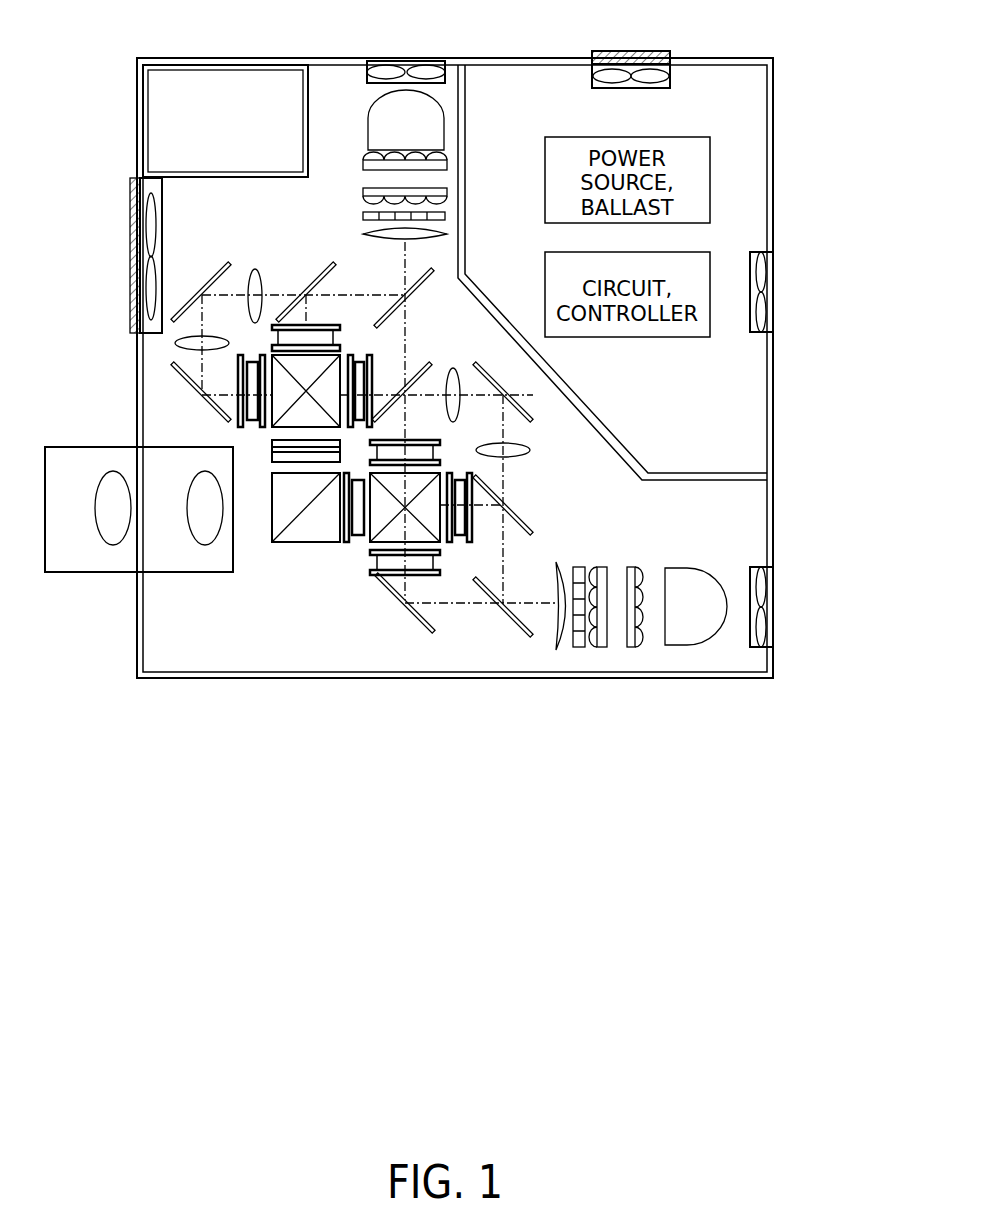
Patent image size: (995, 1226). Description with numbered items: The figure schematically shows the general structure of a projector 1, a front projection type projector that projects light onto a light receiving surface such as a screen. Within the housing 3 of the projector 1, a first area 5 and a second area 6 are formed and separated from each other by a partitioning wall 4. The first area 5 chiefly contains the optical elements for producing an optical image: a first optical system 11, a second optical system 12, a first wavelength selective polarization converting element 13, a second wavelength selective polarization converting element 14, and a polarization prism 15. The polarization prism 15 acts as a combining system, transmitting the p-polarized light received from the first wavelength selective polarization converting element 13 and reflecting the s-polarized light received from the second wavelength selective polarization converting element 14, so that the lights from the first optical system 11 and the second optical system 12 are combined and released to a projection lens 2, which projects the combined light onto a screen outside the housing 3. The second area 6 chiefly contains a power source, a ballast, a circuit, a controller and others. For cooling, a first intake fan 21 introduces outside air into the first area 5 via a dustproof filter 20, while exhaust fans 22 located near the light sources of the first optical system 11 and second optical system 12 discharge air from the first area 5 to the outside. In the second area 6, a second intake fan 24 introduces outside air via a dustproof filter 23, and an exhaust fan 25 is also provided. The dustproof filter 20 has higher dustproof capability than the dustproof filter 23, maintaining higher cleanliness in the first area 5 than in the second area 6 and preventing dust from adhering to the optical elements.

The projector 1 is at (805, 117).
The projection lens 2 is at (63, 560).
The housing 3 is at (137, 657).
The partitioning wall 4 is at (727, 472).
The first area 5 is at (762, 512).
The second area 6 is at (762, 400).
The first optical system 11 is at (597, 537).
The second optical system 12 is at (307, 252).
The first wavelength selective polarization converting element 13 is at (350, 543).
The second wavelength selective polarization converting element 14 is at (267, 448).
The polarization prism 15 is at (270, 532).
The dustproof filter 20 is at (131, 185).
The first intake fan 21 is at (131, 325).
The exhaust fans 22 is at (440, 60).
The dustproof filter 23 is at (666, 51).
The second intake fan 24 is at (670, 78).
The exhaust fan 25 is at (773, 260).